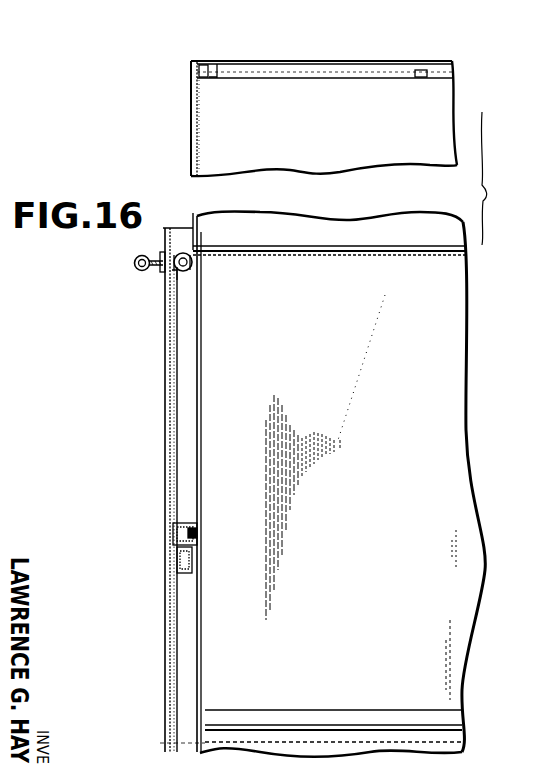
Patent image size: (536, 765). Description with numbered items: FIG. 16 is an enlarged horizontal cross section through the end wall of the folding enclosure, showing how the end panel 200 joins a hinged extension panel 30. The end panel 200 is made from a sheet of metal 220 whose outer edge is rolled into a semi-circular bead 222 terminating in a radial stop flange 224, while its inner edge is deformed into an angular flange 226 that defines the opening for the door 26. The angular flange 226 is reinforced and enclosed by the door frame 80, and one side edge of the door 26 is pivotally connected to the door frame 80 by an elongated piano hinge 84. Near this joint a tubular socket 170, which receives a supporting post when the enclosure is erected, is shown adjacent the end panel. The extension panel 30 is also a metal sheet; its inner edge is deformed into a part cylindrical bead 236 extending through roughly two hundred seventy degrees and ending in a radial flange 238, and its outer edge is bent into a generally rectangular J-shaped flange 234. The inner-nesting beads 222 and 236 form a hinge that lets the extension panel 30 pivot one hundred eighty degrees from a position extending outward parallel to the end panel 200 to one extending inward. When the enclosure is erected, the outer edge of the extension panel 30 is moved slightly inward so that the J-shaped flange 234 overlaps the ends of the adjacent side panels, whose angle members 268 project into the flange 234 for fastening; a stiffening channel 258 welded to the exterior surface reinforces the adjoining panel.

The extension panel 30 is at (190, 120).
The angle member 268 is at (204, 64).
The J-shaped flange 234 is at (227, 63).
The stiffening channel 258 is at (424, 70).
The door 26 is at (170, 637).
The sheet of metal 220 is at (174, 372).
The end panel 200 is at (176, 450).
The radial flange 238 is at (194, 257).
The part cylindrical bead 236 is at (200, 275).
The radial stop flange 224 is at (176, 274).
The semi-circular bead 222 is at (162, 254).
The tubular socket 170 is at (135, 265).
The door frame 80 is at (175, 531).
The angular flange 226 is at (195, 532).
The piano hinge 84 is at (173, 549).